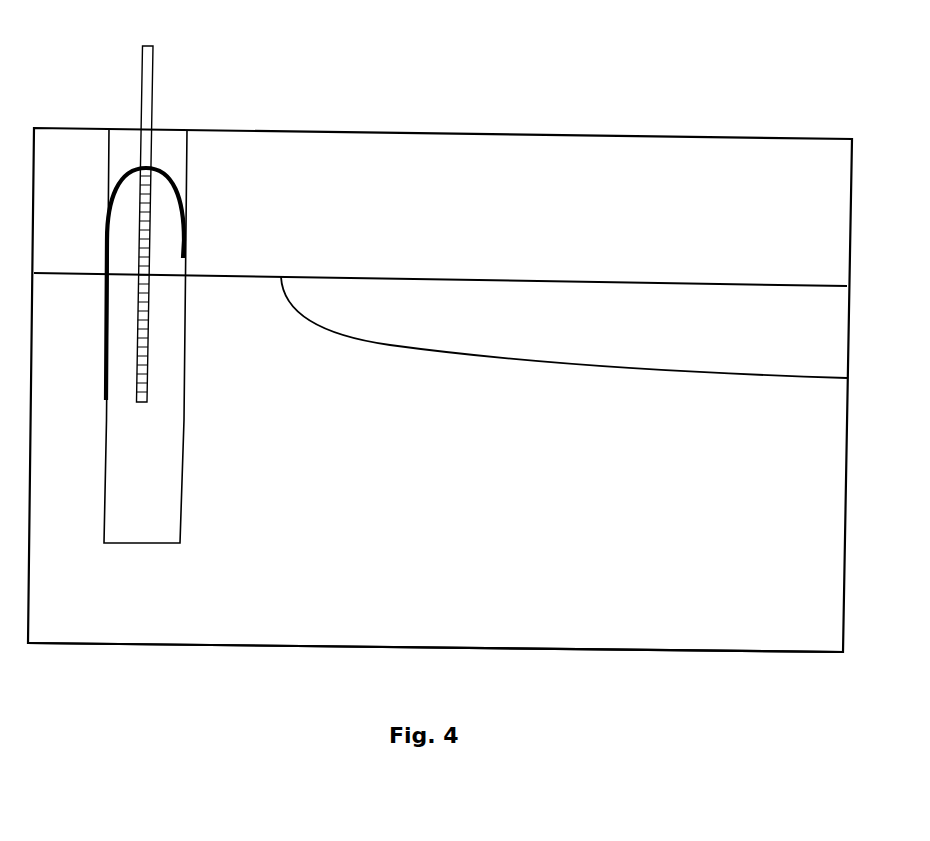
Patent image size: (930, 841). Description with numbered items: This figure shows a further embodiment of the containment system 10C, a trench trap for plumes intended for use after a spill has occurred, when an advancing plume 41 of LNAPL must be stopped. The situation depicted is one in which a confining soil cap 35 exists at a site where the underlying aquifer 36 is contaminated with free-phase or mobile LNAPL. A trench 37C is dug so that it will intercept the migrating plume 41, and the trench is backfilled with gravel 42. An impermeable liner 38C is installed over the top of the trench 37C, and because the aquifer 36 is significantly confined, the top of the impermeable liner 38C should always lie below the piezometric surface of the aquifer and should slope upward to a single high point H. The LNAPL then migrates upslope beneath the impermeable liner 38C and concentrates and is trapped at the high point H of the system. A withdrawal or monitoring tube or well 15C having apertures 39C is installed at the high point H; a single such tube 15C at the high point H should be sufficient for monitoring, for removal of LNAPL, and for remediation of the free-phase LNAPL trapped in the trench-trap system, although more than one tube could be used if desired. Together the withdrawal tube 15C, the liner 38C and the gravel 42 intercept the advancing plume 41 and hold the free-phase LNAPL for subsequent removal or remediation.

The containment system 10C is at (418, 105).
The withdrawal tube 15C is at (155, 78).
The confining soil cap 35 is at (518, 208).
The aquifer 36 is at (388, 466).
The trench 37C is at (165, 412).
The impermeable liner 38C is at (185, 205).
The apertures 39C is at (149, 335).
The plume 41 is at (572, 320).
The gravel 42 is at (163, 468).
The high point H is at (141, 167).